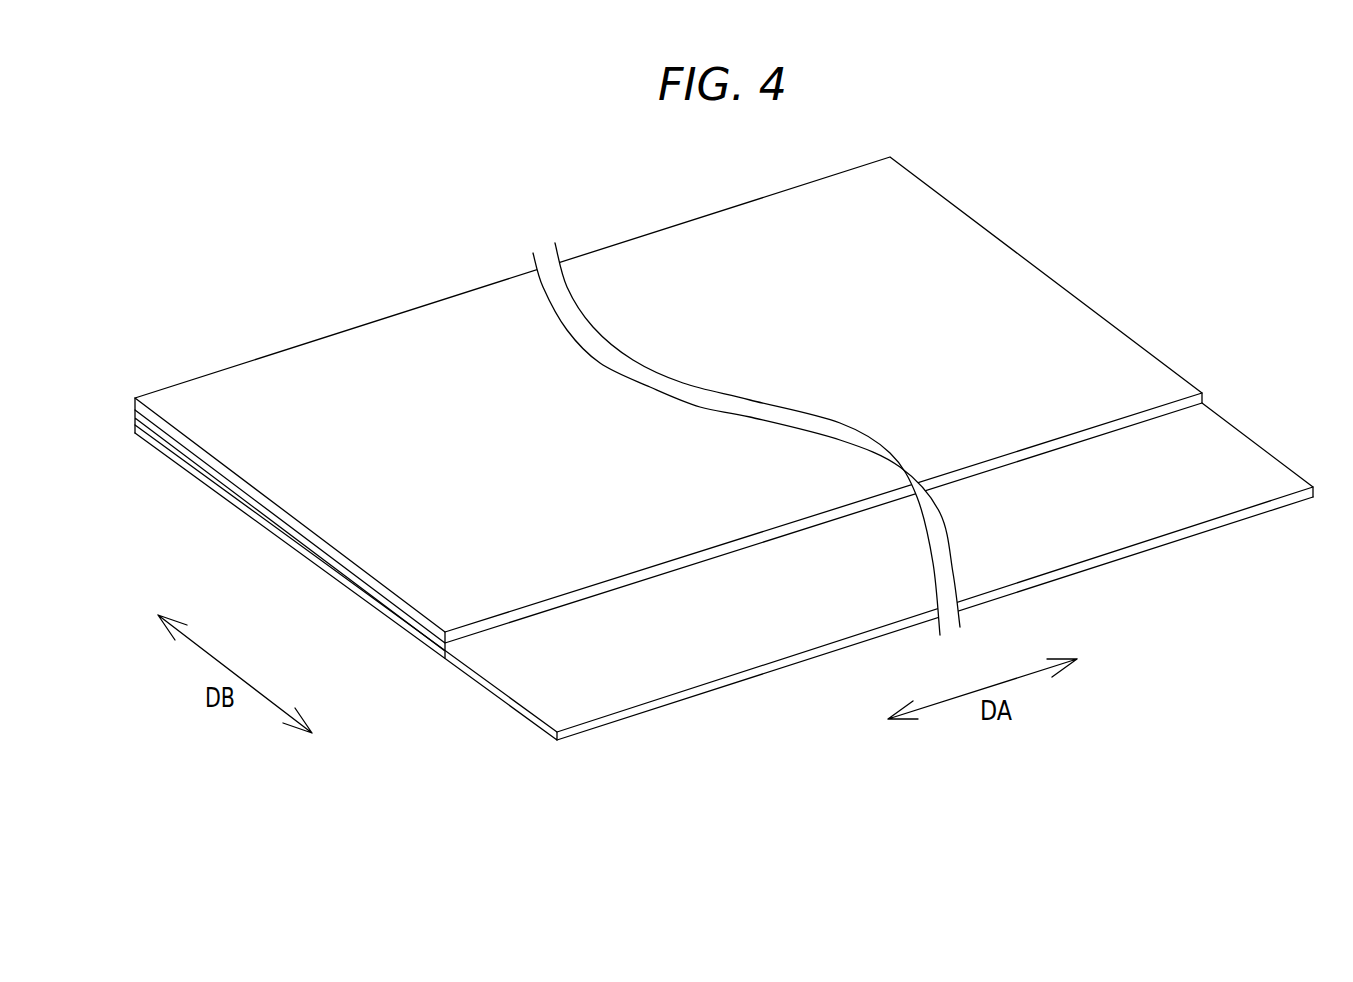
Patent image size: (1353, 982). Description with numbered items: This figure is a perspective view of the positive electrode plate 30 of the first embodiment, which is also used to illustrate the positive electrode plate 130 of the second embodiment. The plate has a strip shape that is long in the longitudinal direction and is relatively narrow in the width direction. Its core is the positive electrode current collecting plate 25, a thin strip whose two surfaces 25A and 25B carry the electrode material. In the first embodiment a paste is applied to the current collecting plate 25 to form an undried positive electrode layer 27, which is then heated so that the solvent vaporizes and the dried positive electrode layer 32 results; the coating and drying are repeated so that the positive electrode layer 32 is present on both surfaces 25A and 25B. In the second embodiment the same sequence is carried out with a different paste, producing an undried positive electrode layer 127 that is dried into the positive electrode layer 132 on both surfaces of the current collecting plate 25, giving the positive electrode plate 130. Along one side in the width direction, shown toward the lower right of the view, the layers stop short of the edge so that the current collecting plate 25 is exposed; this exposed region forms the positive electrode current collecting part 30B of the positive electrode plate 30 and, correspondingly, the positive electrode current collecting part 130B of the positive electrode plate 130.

The positive electrode current collecting plate 25 is at (528, 683).
The surface of positive electrode current collecting plate 25A is at (567, 692).
The surface of positive electrode current collecting plate 25B is at (547, 732).
The positive electrode plate 30 is at (668, 388).
The positive electrode plate 130 is at (1048, 240).
The positive electrode current collecting part 30B is at (1272, 445).
The positive electrode current collecting part 130B is at (1295, 428).
The positive electrode layer 32 is at (252, 470).
The undried positive electrode layer 27 is at (252, 470).
The positive electrode layer 132 is at (252, 470).
The undried positive electrode layer 127 is at (185, 402).